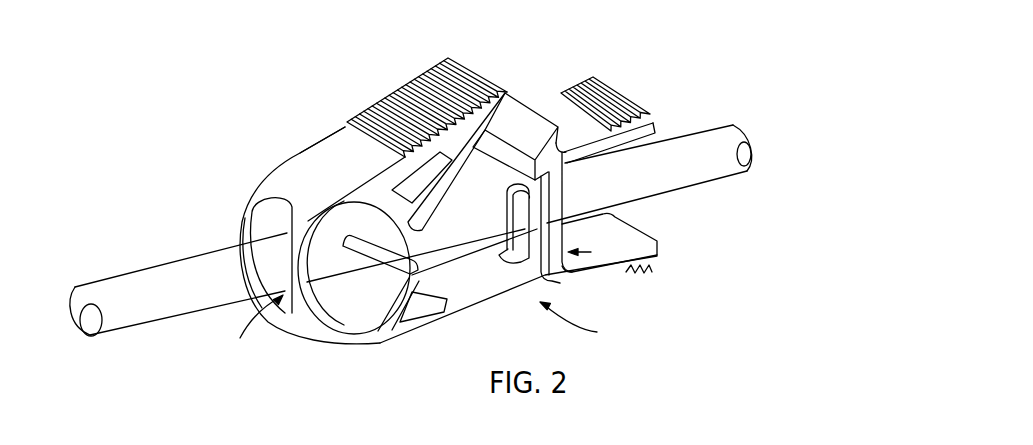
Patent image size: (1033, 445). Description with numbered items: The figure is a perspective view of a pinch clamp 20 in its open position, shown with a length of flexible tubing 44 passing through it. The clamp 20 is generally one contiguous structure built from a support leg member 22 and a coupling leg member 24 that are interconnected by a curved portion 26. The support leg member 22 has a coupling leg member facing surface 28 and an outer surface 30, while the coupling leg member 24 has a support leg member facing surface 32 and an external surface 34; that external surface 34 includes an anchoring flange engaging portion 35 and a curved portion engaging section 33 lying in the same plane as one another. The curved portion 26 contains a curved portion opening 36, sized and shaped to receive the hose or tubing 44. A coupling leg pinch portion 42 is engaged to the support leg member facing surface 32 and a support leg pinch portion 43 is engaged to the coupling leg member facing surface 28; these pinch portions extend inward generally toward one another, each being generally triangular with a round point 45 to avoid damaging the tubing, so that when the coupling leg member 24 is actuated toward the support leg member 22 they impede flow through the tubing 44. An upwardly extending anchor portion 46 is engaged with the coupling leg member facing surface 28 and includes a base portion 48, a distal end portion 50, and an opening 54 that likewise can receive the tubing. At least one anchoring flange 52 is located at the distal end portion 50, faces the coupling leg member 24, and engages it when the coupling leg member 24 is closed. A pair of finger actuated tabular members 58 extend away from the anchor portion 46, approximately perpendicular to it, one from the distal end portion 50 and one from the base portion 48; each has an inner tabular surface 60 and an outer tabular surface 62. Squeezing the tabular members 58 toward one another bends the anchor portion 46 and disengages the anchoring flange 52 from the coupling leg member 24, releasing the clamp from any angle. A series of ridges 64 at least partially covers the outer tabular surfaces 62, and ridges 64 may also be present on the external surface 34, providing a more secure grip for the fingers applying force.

The pinch clamp 20 is at (617, 62).
The support leg member 22 is at (579, 324).
The coupling leg member 24 is at (295, 148).
The curved portion 26 is at (253, 329).
The coupling leg member facing surface 28 is at (503, 279).
The outer surface 30 is at (458, 320).
The support leg member facing surface 32 is at (440, 190).
The curved portion engaging section 33 is at (318, 163).
The external surface 34 is at (354, 174).
The anchoring flange engaging portion 35 is at (467, 73).
The curved portion opening 36 is at (262, 222).
The coupling leg pinch portion 42 is at (420, 228).
The support leg pinch portion 43 is at (408, 308).
The tubing 44 is at (143, 268).
The round point 45 is at (400, 278).
The anchor portion 46 is at (617, 238).
The base portion 48 is at (578, 272).
The distal end portion 50 is at (563, 153).
The anchoring flange 52 is at (587, 236).
The opening 54 is at (508, 263).
The finger actuated tabular members 58 is at (650, 125).
The inner tabular surface 60 is at (618, 142).
The outer tabular surface 62 is at (557, 112).
The ridges 64 is at (413, 103).